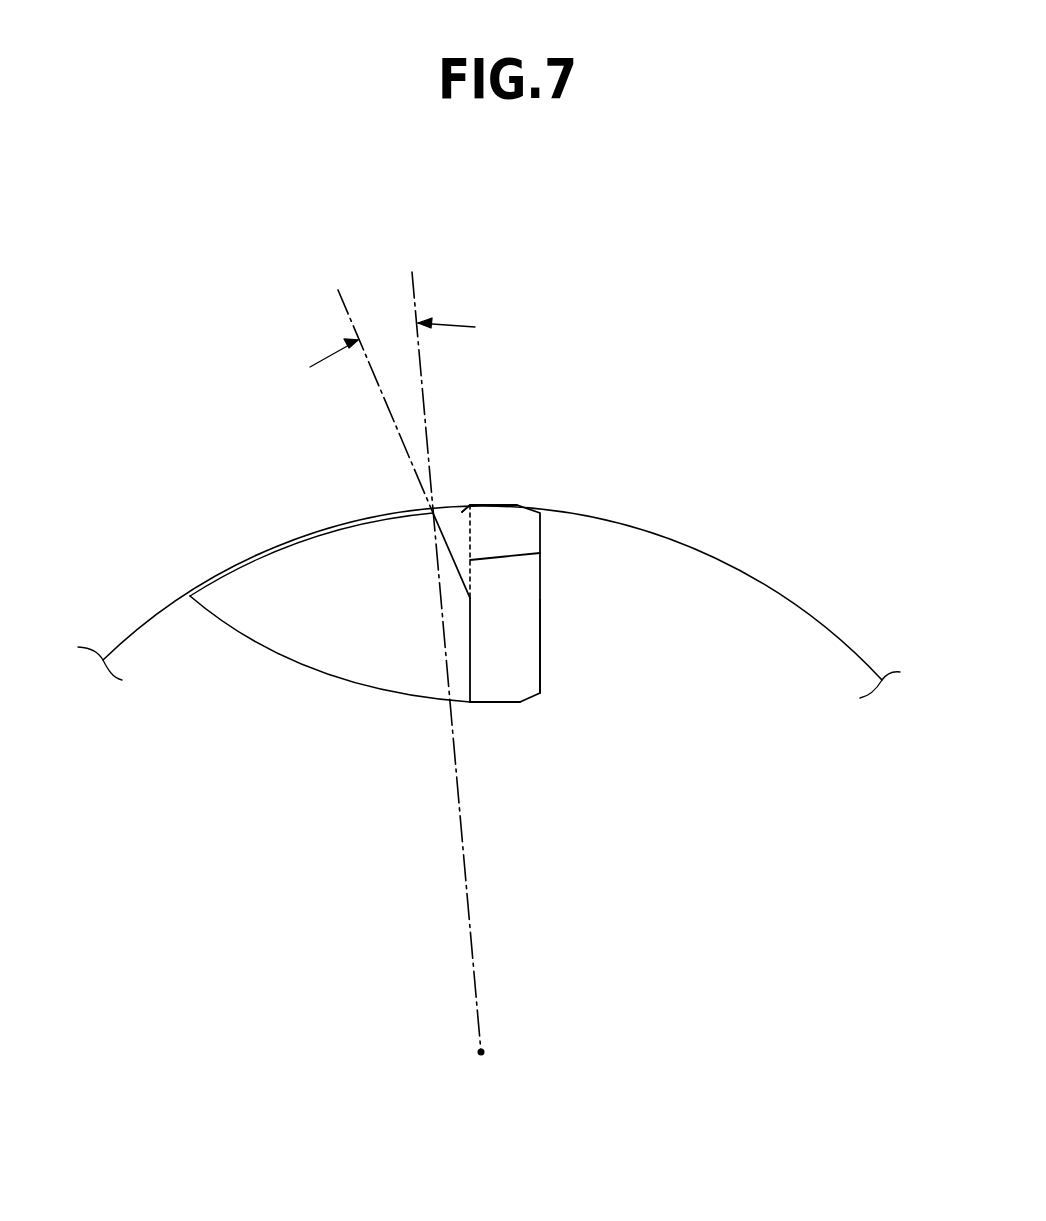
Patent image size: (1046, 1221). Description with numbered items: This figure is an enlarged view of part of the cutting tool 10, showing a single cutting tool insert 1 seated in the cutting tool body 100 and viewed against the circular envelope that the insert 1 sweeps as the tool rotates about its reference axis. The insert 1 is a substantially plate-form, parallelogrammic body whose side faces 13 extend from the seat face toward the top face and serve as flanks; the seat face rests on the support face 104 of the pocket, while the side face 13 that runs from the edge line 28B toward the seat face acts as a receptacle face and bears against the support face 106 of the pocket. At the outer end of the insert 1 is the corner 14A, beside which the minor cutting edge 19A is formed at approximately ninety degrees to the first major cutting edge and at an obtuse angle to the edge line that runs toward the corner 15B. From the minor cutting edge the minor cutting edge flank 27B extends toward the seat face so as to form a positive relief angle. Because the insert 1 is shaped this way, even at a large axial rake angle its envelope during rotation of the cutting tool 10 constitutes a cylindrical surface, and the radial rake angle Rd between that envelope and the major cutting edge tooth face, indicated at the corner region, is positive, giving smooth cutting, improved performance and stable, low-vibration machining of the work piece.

The cutting tool 10 is at (758, 472).
The cutting tool body 100 is at (768, 633).
The cutting tool insert 1 is at (520, 613).
The side face 13 is at (525, 570).
The support face 104 is at (540, 663).
The support face 106 is at (507, 705).
The corner 14A is at (433, 513).
The corner 15B is at (470, 702).
The minor cutting edge 19A is at (447, 542).
The minor cutting edge flank 27B is at (460, 532).
The edge line 28B is at (470, 657).